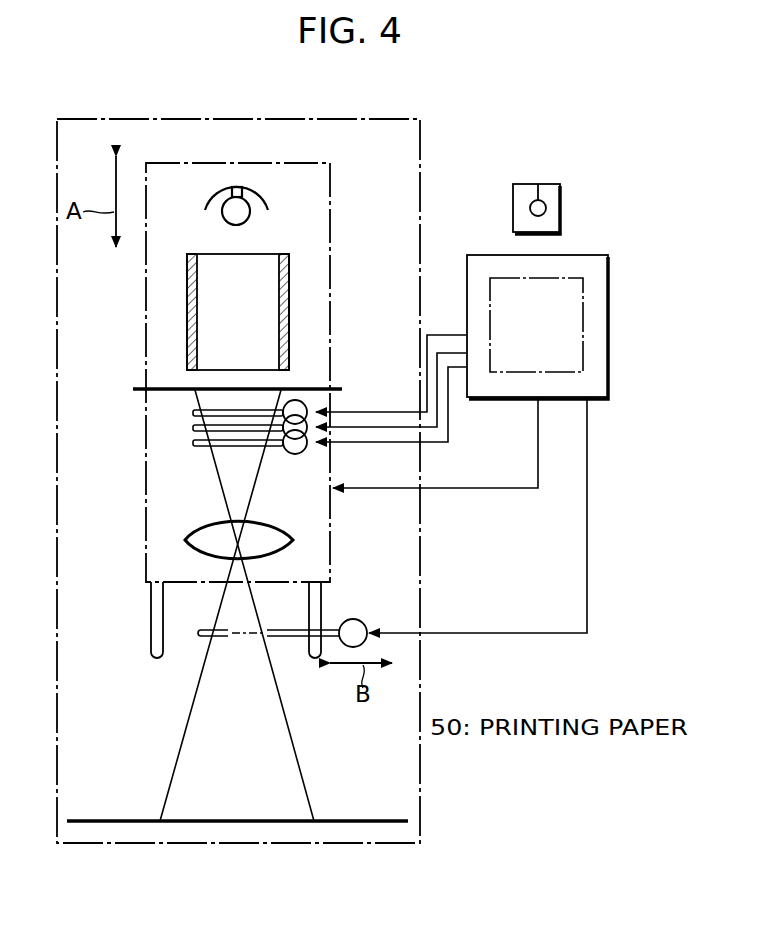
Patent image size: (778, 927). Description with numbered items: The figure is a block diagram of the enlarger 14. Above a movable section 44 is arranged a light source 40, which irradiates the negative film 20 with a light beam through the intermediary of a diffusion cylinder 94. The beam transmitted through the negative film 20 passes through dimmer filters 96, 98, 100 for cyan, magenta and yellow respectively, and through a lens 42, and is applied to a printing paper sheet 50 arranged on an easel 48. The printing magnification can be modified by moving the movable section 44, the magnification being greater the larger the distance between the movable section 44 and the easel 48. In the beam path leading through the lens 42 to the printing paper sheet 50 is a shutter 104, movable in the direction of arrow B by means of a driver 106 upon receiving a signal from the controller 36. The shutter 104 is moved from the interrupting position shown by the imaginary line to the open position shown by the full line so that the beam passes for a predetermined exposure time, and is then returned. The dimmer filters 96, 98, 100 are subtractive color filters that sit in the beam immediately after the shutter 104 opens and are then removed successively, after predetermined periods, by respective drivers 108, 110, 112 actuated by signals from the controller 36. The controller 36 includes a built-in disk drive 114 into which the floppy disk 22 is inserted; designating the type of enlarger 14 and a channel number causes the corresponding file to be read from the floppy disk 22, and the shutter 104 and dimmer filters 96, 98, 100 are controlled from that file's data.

The enlarger 14 is at (80, 117).
The movable section 44 is at (146, 274).
The light source 40 is at (253, 192).
The diffusion cylinder 94 is at (289, 281).
The negative film 20 is at (316, 391).
The dimmer filter for C (cyan) 96 is at (193, 413).
The dimmer filter for M (magenta) 98 is at (193, 428).
The dimmer filter for Y (yellow) 100 is at (193, 443).
The driver 108 is at (307, 403).
The driver 110 is at (297, 414).
The driver 112 is at (297, 455).
The lens 42 is at (205, 526).
The shutter 104 is at (294, 640).
The driver 106 is at (369, 600).
The controller 36 is at (610, 306).
The disk drive 114 is at (583, 343).
The floppy disk 22 is at (563, 209).
The printing paper sheet 50 is at (102, 818).
The easel 48 is at (248, 837).